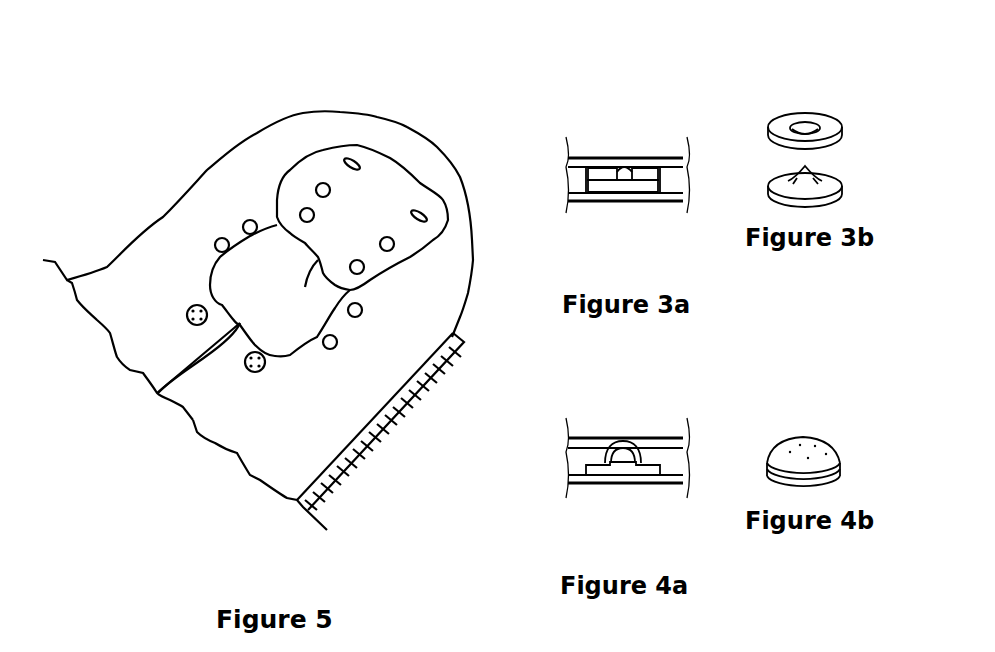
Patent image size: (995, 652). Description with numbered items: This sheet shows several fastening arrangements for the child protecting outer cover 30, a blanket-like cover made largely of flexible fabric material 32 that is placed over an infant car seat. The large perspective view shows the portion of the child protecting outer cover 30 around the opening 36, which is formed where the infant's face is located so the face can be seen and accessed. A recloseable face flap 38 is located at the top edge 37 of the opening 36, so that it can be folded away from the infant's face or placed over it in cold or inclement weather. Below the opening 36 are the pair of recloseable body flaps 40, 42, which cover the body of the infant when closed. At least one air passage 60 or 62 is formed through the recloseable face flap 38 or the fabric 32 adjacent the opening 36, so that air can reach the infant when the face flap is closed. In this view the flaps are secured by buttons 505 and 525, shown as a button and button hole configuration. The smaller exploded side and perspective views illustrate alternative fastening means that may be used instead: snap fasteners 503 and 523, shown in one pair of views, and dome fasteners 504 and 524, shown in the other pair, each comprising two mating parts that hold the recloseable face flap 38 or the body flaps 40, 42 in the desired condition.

In FIG. 5, the child protecting outer cover 30 is at (267, 103).
In FIG. 3A, the flexible fabric material 32 is at (675, 201).
In FIG. 4A, the flexible fabric material 32 is at (675, 483).
In FIG. 5, the opening 36 is at (272, 225).
In FIG. 5, the top edge of the opening 37 is at (272, 225).
In FIG. 5, the recloseable face flap 38 is at (390, 177).
In FIG. 3A, the recloseable face flap 38 is at (668, 162).
In FIG. 4A, the recloseable face flap 38 is at (668, 440).
In FIG. 5, the recloseable body flap 40 is at (108, 293).
In FIG. 5, the recloseable body flap 42 is at (243, 428).
In FIG. 5, the air passage 60 is at (393, 247).
In FIG. 5, the air passage 62 is at (362, 314).
In FIG. 3A, the snap fastener 503 is at (605, 192).
In FIG. 3B, the snap fastener 503 is at (832, 180).
In FIG. 4A, the dome fastener 504 is at (603, 475).
In FIG. 4B, the dome fastener 504 is at (838, 478).
In FIG. 5, the button 505 is at (191, 306).
In FIG. 3A, the snap fastener 523 is at (598, 170).
In FIG. 3B, the snap fastener 523 is at (832, 122).
In FIG. 4A, the dome fastener 524 is at (608, 441).
In FIG. 4B, the dome fastener 524 is at (820, 443).
In FIG. 5, the button 525 is at (358, 156).